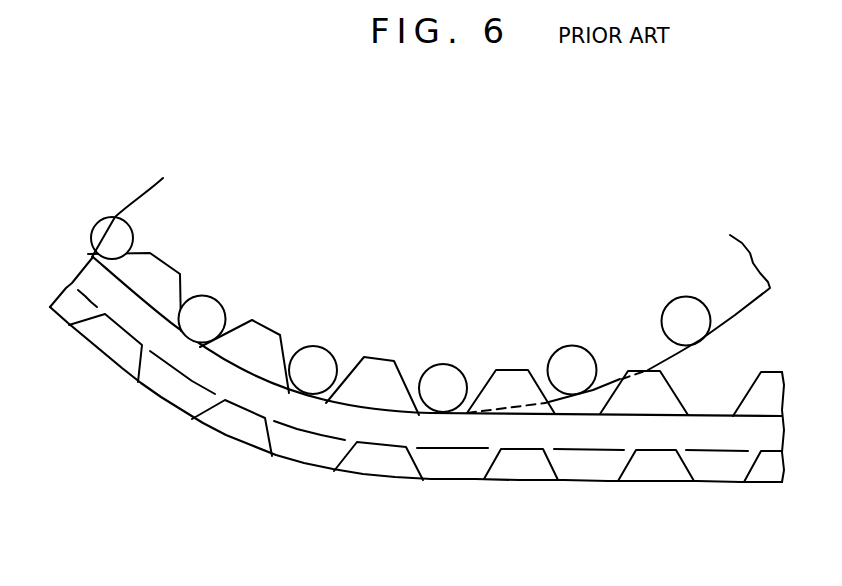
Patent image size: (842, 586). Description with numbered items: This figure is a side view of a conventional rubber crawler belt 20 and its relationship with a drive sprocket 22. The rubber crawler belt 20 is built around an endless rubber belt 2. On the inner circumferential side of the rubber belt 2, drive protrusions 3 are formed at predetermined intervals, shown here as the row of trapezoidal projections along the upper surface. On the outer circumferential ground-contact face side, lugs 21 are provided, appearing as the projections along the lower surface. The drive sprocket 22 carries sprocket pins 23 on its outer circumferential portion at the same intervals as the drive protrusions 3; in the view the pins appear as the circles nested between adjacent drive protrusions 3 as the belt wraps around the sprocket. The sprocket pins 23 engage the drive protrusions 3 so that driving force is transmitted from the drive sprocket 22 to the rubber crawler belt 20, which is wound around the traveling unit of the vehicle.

The rubber belt 2 is at (315, 422).
The drive protrusions 3 is at (253, 353).
The rubber crawler belt 20 is at (417, 404).
The lugs 21 is at (590, 470).
The drive sprocket 22 is at (153, 197).
The sprocket pins 23 is at (203, 295).